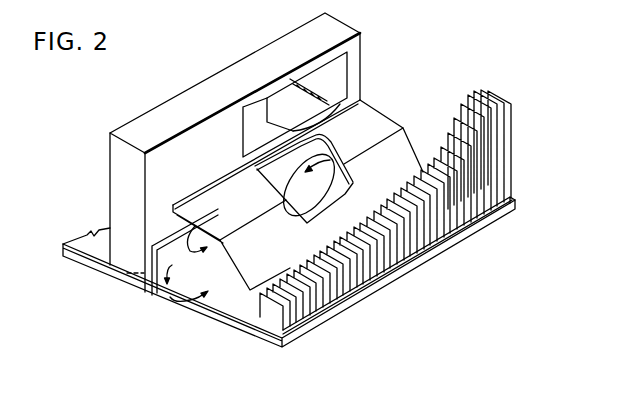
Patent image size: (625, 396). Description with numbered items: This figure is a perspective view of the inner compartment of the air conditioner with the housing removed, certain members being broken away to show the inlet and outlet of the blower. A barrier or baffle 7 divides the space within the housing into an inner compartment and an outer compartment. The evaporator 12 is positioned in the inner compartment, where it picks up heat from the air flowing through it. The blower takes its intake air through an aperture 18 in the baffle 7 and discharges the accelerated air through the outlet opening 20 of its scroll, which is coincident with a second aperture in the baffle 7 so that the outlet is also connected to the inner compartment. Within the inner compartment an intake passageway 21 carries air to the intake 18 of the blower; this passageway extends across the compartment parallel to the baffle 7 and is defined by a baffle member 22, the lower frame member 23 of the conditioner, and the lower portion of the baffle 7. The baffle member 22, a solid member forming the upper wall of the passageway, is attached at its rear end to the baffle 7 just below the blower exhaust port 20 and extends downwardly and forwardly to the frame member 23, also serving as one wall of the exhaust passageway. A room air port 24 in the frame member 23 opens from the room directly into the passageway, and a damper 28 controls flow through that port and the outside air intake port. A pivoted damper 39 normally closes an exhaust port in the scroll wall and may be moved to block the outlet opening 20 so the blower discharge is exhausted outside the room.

The barrier 7 is at (215, 122).
The evaporator 12 is at (503, 100).
The aperture 18 is at (348, 162).
The outlet opening 20 is at (341, 60).
The intake passageway 21 is at (195, 226).
The baffle member 22 is at (404, 129).
The lower frame member 23 is at (214, 308).
The room air port 24 is at (181, 313).
The damper 28 is at (146, 291).
The damper 39 is at (252, 121).